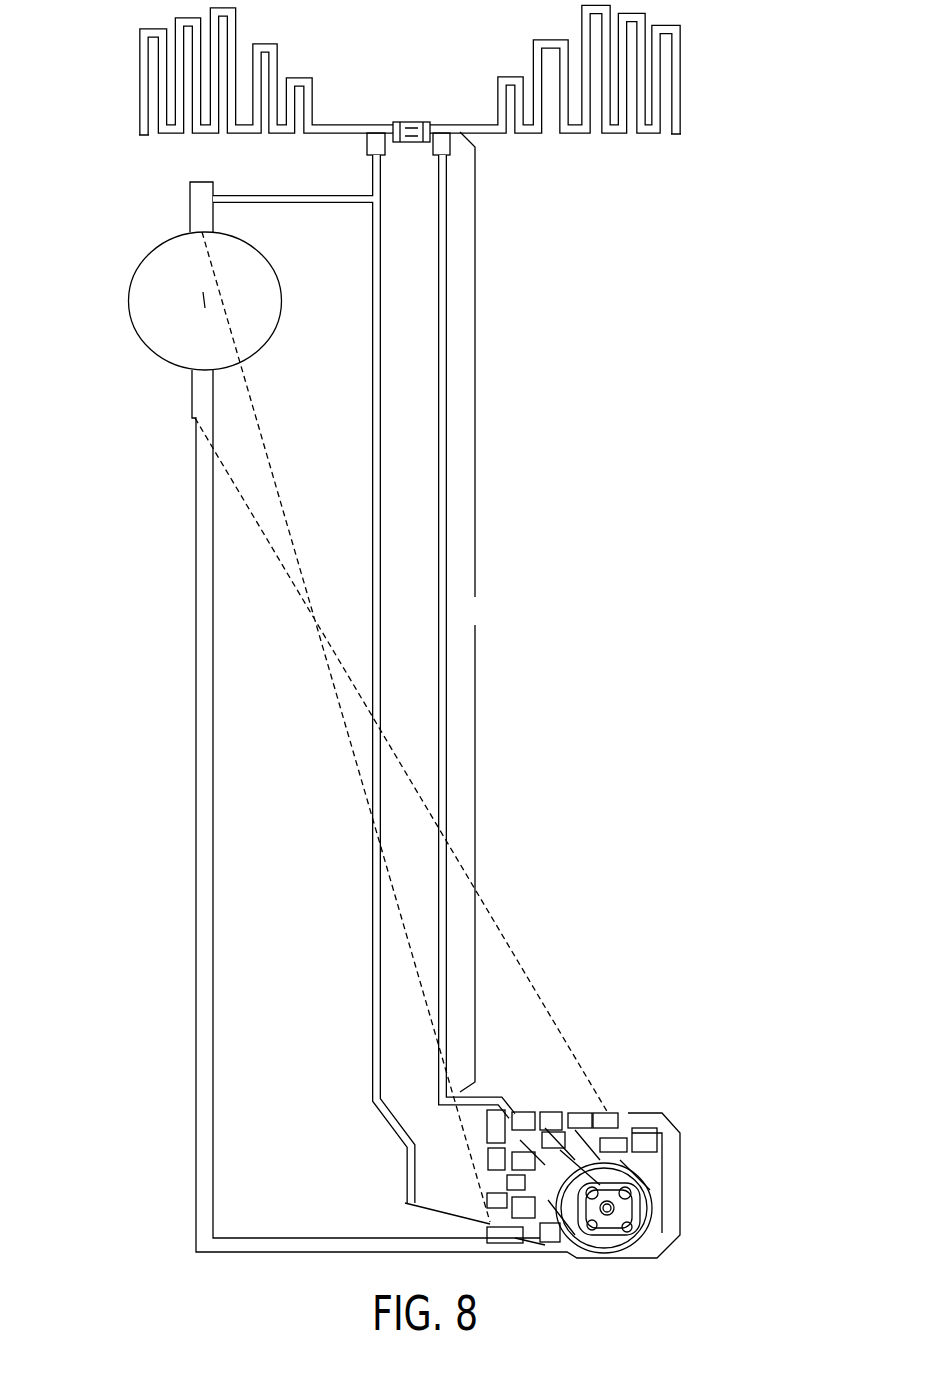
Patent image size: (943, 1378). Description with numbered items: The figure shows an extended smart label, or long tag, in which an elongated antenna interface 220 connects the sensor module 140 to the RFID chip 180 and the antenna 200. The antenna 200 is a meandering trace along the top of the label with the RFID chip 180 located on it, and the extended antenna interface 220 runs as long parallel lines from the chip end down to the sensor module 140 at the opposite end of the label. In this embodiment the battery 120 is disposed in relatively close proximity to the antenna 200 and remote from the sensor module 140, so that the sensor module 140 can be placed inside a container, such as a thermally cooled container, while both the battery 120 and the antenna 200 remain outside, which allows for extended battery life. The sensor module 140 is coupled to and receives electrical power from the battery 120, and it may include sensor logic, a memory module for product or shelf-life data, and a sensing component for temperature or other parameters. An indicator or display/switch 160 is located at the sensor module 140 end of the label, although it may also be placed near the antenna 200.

The battery 120 is at (128, 295).
The sensor module 140 is at (648, 1079).
The indicator/switch 160 is at (643, 1203).
The RFID chip 180 is at (420, 125).
The antenna 200 is at (688, 88).
The extended antenna interface 220 is at (475, 597).